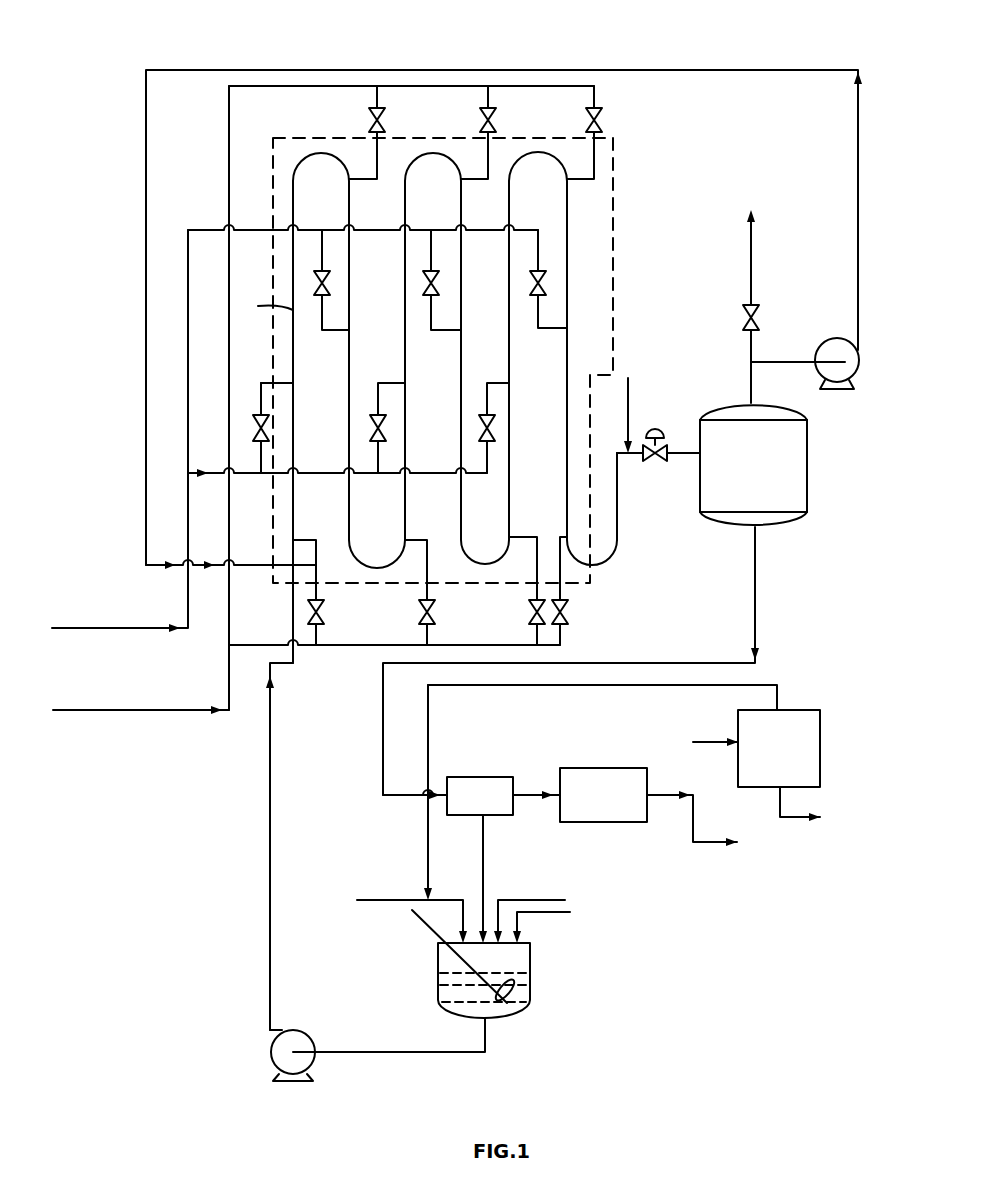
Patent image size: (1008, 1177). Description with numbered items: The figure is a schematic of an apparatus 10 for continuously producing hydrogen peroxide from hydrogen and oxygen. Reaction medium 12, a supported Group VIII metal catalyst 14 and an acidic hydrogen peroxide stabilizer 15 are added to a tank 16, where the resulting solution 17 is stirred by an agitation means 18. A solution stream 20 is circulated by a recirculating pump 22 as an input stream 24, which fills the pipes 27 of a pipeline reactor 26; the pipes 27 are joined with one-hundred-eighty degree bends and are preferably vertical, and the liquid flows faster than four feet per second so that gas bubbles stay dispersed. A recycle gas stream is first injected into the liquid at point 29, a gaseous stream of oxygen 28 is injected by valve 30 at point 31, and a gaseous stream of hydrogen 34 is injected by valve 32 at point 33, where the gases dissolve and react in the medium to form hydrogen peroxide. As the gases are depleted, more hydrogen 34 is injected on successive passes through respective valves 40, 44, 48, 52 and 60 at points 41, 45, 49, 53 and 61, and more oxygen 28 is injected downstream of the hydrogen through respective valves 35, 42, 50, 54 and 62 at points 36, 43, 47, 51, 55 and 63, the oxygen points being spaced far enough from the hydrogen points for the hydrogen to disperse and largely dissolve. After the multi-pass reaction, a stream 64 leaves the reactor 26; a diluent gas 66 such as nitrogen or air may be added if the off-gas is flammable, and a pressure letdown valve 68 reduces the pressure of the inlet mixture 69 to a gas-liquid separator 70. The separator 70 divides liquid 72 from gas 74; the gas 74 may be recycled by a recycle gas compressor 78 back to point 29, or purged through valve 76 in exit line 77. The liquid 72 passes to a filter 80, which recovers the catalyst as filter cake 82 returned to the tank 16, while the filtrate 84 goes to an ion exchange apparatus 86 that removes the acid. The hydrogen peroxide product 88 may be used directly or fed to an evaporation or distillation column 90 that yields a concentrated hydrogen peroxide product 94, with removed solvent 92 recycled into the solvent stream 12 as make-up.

The apparatus 10 is at (268, 55).
The reaction medium 12 is at (397, 900).
The catalyst 14 is at (510, 896).
The hydrogen peroxide stabilizer 15 is at (533, 943).
The tank 16 is at (438, 958).
The solution 17 is at (438, 996).
The agitation means 18 is at (510, 1003).
The solution stream 20 is at (425, 1055).
The recirculating pump 22 is at (316, 1038).
The input stream 24 is at (272, 860).
The pipeline reactor 26 is at (596, 570).
The pipes 27 is at (264, 309).
The gaseous stream of oxygen 28 is at (229, 130).
The point 29 is at (316, 565).
The valve 30 is at (325, 616).
The point 31 is at (308, 540).
The valve 32 is at (258, 428).
The point 33 is at (286, 383).
The gaseous stream of hydrogen 34 is at (258, 230).
The valve 35 is at (372, 122).
The point 36 is at (355, 180).
The valve 40 is at (336, 331).
The point 41 is at (484, 122).
The valve 42 is at (437, 622).
The point 43 is at (420, 540).
The valve 44 is at (380, 414).
The point 45 is at (380, 412).
The point 47 is at (467, 180).
The valve 48 is at (447, 331).
The point 49 is at (443, 375).
The valve 50 is at (531, 617).
The point 51 is at (527, 537).
The valve 52 is at (483, 414).
The point 53 is at (498, 383).
The valve 54 is at (598, 116).
The point 55 is at (580, 180).
The valve 60 is at (537, 292).
The point 61 is at (552, 330).
The valve 62 is at (566, 618).
The point 63 is at (563, 540).
The stream 64 is at (618, 526).
The diluent gas 66 is at (628, 402).
The pressure letdown valve 68 is at (660, 462).
The inlet mixture 69 is at (692, 452).
The gas-liquid separator 70 is at (700, 490).
The liquid 72 is at (755, 612).
The gas 74 is at (146, 322).
The valve 76 is at (747, 312).
The exit line 77 is at (752, 278).
The recycle gas compressor 78 is at (840, 390).
The filter 80 is at (470, 777).
The filter cake 82 is at (483, 866).
The filtrate 84 is at (522, 795).
The ion exchange apparatus 86 is at (605, 768).
The hydrogen peroxide product 88 is at (698, 830).
The column 90 is at (698, 740).
The solvent 92 is at (790, 710).
The concentrated hydrogen peroxide product 94 is at (790, 820).